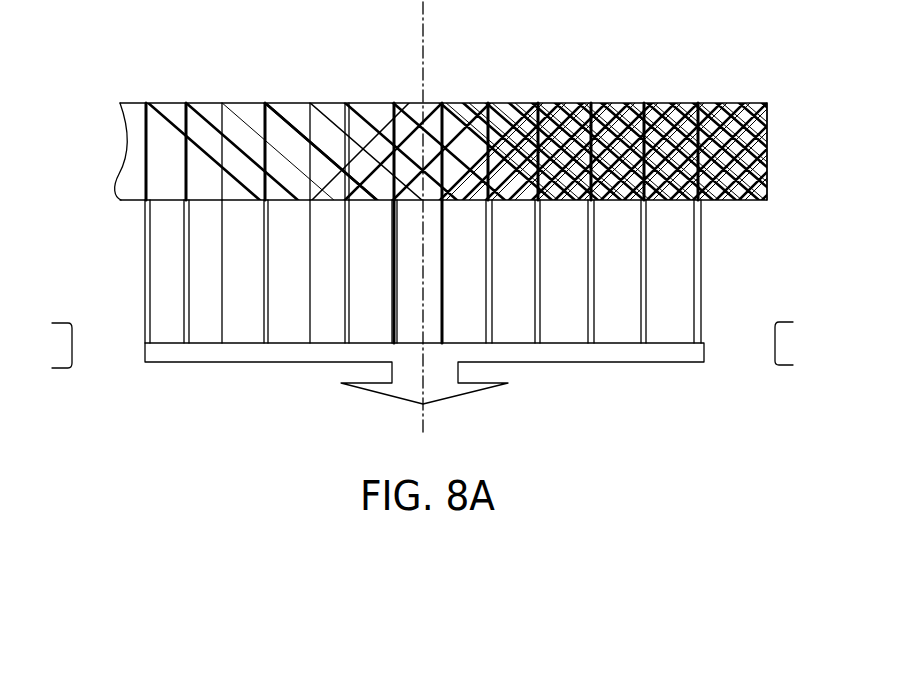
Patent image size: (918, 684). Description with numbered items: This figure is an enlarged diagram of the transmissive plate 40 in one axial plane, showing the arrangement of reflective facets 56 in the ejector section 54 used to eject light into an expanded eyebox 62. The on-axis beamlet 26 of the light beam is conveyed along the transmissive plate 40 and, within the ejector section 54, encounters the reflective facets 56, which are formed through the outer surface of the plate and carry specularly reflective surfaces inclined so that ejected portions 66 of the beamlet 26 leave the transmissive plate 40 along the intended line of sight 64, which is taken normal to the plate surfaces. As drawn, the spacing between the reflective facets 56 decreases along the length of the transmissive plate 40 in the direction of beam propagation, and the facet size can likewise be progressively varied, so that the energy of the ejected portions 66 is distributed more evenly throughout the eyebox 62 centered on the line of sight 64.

The on-axis beamlet 26 is at (318, 101).
The transmissive plate 40 is at (774, 152).
The ejector section 54 is at (238, 92).
The reflective facets 56 is at (146, 101).
The eyebox 62 is at (72, 345).
The line of sight 64 is at (425, 32).
The ejected portions of the beamlet 66 is at (258, 238).